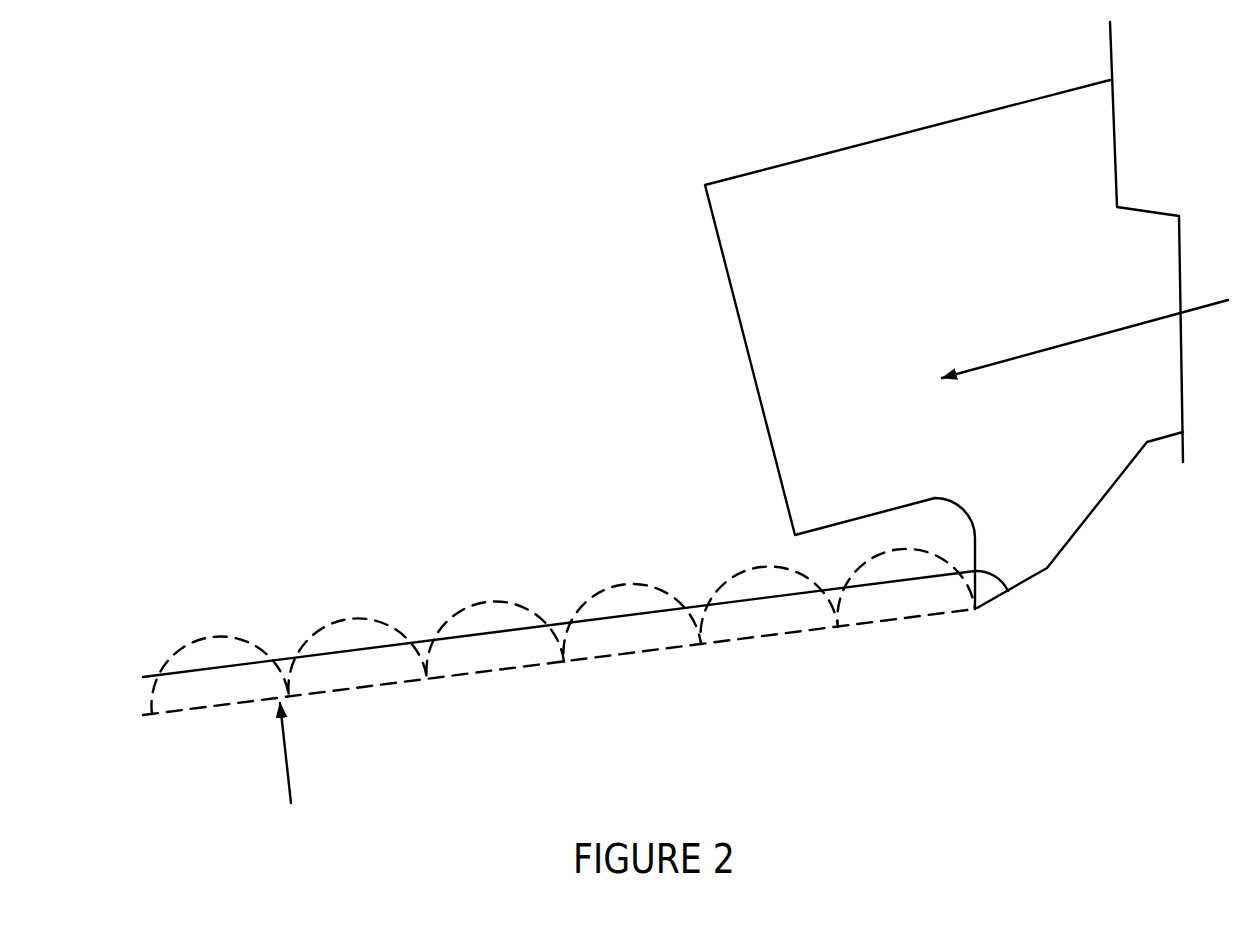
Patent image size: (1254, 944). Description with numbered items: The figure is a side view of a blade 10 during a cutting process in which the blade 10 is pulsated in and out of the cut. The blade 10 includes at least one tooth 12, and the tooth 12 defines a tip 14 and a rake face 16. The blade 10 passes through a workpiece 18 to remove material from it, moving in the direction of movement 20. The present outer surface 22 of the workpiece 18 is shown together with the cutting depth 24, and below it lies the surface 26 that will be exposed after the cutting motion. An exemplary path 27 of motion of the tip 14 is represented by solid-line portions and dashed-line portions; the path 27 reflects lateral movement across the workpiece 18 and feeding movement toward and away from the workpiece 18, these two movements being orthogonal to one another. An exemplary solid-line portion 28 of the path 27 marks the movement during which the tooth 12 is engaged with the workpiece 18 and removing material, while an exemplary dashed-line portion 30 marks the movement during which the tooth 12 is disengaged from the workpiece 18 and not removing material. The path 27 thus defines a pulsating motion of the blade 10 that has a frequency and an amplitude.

The blade 10 is at (760, 140).
The tooth 12 is at (1047, 514).
The tip 14 is at (978, 610).
The rake face 16 is at (973, 545).
The workpiece 18 is at (733, 747).
The direction of movement 20 is at (1025, 353).
The present outer surface 22 is at (468, 630).
The cutting depth 24 is at (270, 659).
The exposed surface 26 is at (493, 675).
The path 27 is at (282, 456).
The solid-line portion 28 is at (568, 665).
The dashed-line portion 30 is at (345, 615).